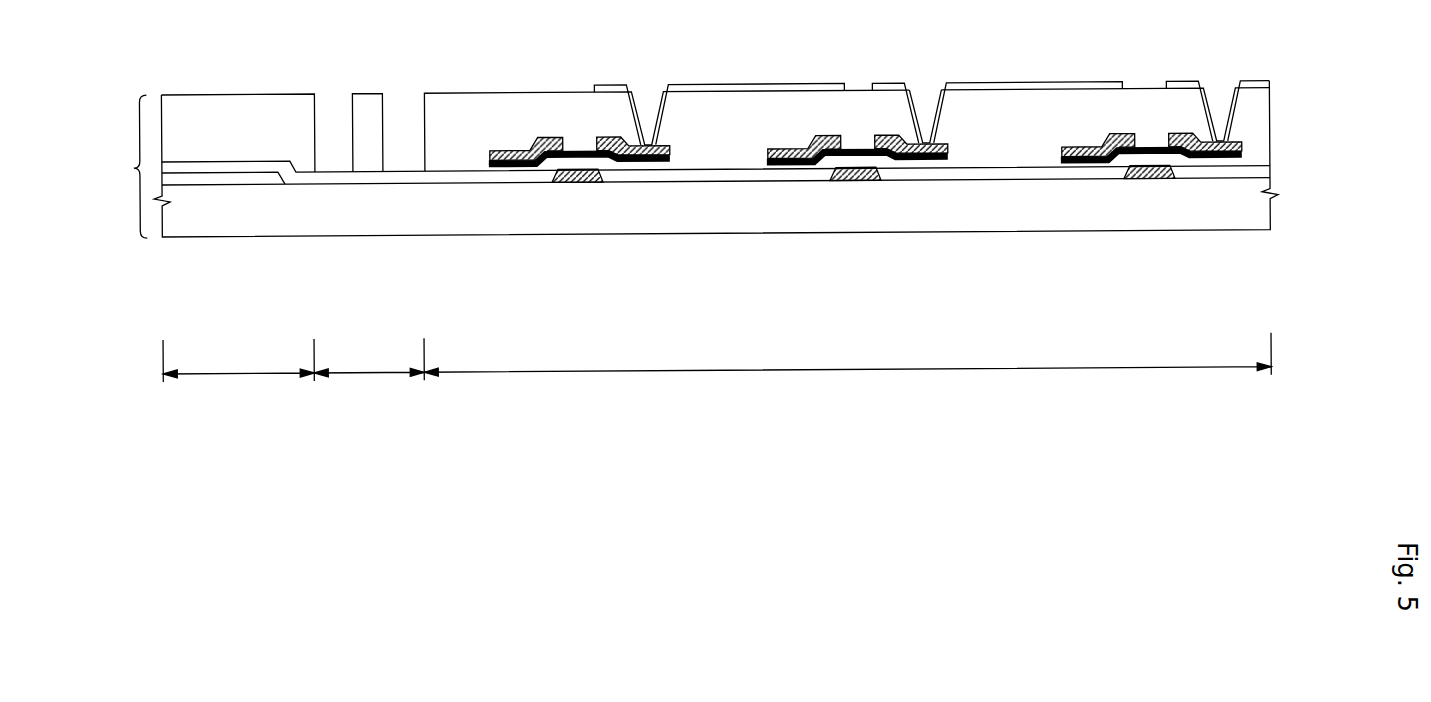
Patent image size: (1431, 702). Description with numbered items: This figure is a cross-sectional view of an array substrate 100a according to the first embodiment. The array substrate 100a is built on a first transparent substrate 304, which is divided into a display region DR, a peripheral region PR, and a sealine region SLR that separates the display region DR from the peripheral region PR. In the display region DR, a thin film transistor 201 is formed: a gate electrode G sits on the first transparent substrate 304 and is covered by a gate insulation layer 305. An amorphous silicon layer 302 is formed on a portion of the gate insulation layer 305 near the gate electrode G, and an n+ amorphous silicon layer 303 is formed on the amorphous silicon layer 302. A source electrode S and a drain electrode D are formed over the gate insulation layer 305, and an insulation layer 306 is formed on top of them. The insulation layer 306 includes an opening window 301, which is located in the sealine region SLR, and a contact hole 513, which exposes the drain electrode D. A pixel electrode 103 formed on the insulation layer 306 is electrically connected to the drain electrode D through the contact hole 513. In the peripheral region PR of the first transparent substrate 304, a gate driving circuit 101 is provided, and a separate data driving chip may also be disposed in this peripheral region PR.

The array substrate 100a is at (110, 166).
The gate driving circuit 101 is at (242, 181).
The opening window 301 is at (333, 108).
The contact hole 513 is at (924, 94).
The pixel electrode 103 is at (1270, 89).
The insulation layer 306 is at (1265, 144).
The gate insulation layer 305 is at (1267, 182).
The first transparent substrate 304 is at (807, 226).
The thin film transistor 201 is at (597, 226).
The source electrode S is at (498, 162).
The gate electrode G is at (575, 183).
The drain electrode D is at (663, 153).
The amorphous silicon layer 302 is at (628, 173).
The n+ amorphous silicon layer 303 is at (650, 170).
The peripheral region PR is at (238, 375).
The sealine region SLR is at (369, 374).
The display region DR is at (847, 372).